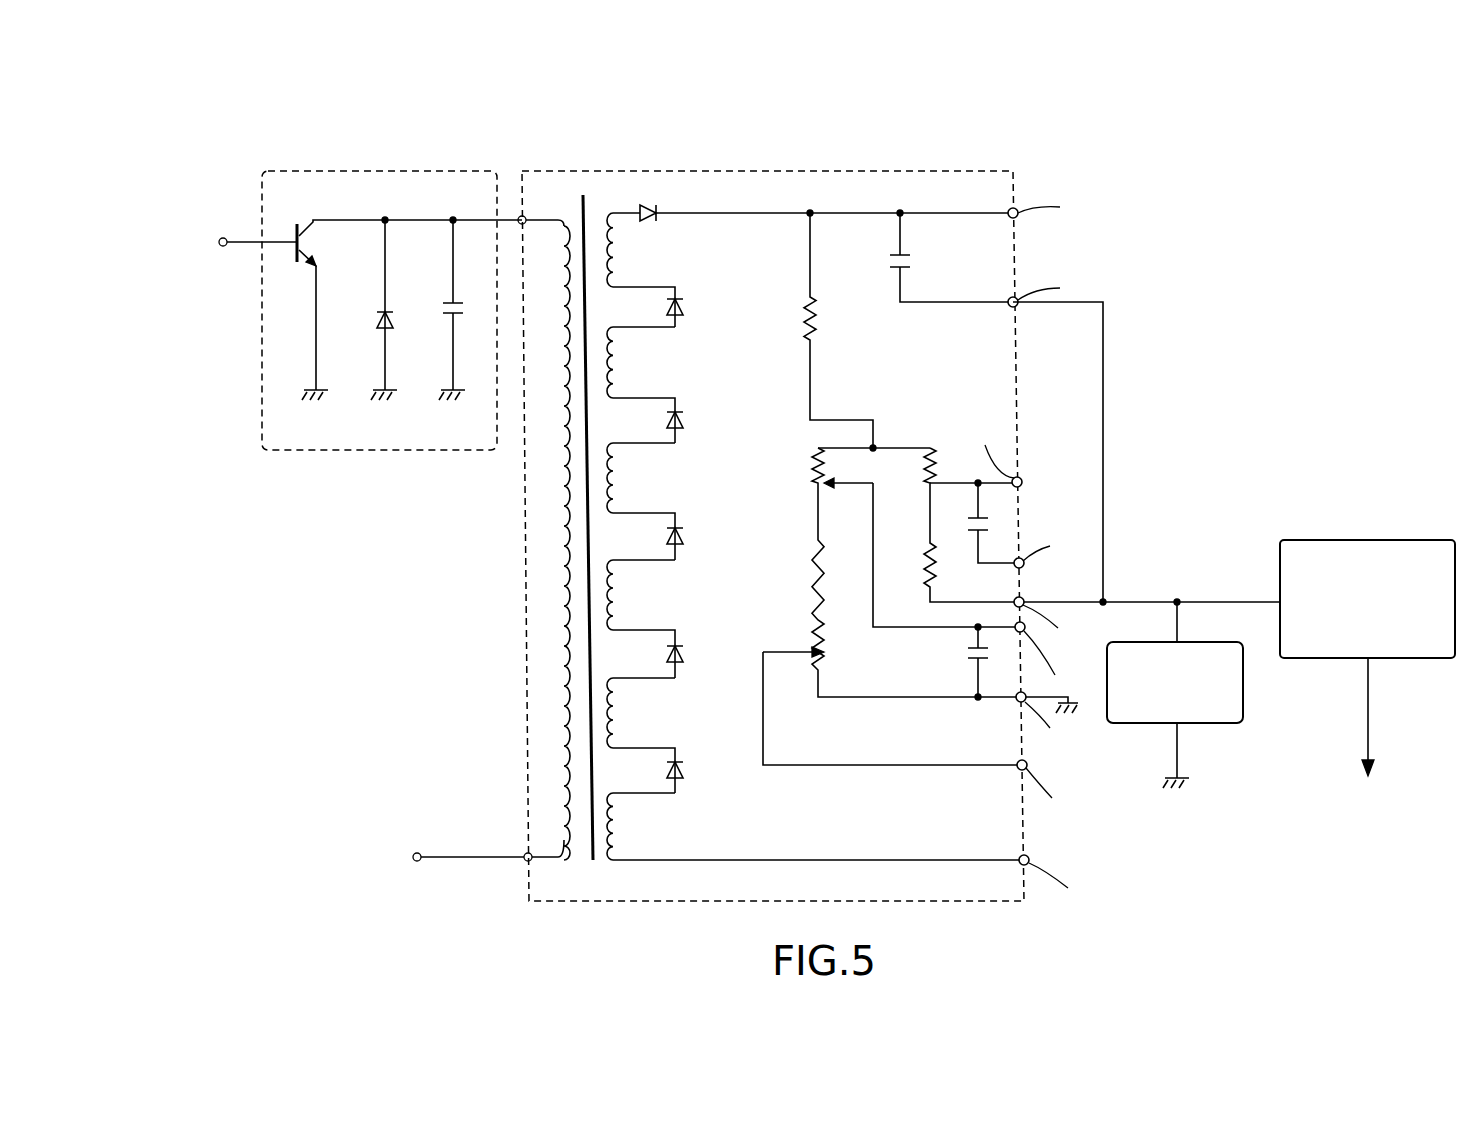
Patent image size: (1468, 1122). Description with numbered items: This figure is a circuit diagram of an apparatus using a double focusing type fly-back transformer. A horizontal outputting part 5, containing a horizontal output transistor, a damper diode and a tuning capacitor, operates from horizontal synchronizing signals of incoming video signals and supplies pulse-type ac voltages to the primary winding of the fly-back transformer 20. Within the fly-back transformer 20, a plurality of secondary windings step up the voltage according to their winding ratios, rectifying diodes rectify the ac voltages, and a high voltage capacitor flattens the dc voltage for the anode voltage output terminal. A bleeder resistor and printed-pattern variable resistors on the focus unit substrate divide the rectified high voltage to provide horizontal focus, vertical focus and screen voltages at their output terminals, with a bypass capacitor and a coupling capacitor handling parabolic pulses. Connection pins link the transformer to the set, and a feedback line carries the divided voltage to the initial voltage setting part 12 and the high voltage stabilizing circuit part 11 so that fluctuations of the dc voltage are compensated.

The horizontal outputting part 5 is at (455, 171).
The fly-back transformer 20 is at (962, 171).
The high voltage stabilizing circuit part 11 is at (1342, 540).
The initial voltage setting part 12 is at (1232, 723).